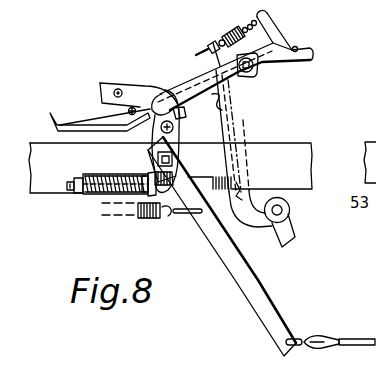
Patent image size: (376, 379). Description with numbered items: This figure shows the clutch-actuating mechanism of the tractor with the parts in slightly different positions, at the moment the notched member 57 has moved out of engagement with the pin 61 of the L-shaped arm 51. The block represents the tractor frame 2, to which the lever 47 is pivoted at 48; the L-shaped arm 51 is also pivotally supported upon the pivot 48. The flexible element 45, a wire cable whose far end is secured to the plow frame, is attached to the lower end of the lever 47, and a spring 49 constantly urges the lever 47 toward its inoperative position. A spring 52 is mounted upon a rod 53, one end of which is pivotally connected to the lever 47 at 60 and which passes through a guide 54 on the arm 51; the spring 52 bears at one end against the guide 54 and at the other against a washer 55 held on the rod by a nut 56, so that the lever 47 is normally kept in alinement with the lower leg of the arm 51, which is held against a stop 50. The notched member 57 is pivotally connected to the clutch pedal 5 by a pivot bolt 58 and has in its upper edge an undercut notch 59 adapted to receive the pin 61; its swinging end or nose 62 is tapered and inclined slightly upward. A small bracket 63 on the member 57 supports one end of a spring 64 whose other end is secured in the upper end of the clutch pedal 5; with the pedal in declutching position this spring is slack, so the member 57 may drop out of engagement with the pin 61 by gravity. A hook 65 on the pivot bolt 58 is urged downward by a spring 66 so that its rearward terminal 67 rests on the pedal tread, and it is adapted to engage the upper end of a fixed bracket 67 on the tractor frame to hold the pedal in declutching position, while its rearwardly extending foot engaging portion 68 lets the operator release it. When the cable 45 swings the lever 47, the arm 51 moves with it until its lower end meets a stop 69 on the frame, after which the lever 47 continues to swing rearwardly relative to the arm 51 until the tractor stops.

The support block 2 is at (302, 155).
The clutch pedal 5 is at (279, 27).
The flexible element 45 is at (343, 342).
The lever 47 is at (268, 303).
The pivot 48 is at (173, 157).
The spring 49 is at (152, 220).
The stop 50 is at (160, 128).
The L-shaped arm 51 is at (105, 83).
The spring 52 is at (95, 195).
The rod 53 is at (65, 190).
The guide 54 is at (150, 173).
The washer 55 is at (83, 175).
The nut 56 is at (75, 193).
The notched member 57 is at (167, 88).
The pivot bolt 58 is at (252, 78).
The undercut notch 59 is at (124, 116).
The pivotal connection 60 is at (175, 170).
The pin 61 is at (121, 86).
The nose 62 is at (92, 115).
The small bracket 63 is at (217, 50).
The spring 64 is at (232, 32).
The hook 65 is at (183, 83).
The spring 66 is at (240, 128).
The fixed bracket 67 is at (296, 47).
The foot engaging portion 68 is at (318, 54).
The stop 69 is at (197, 200).